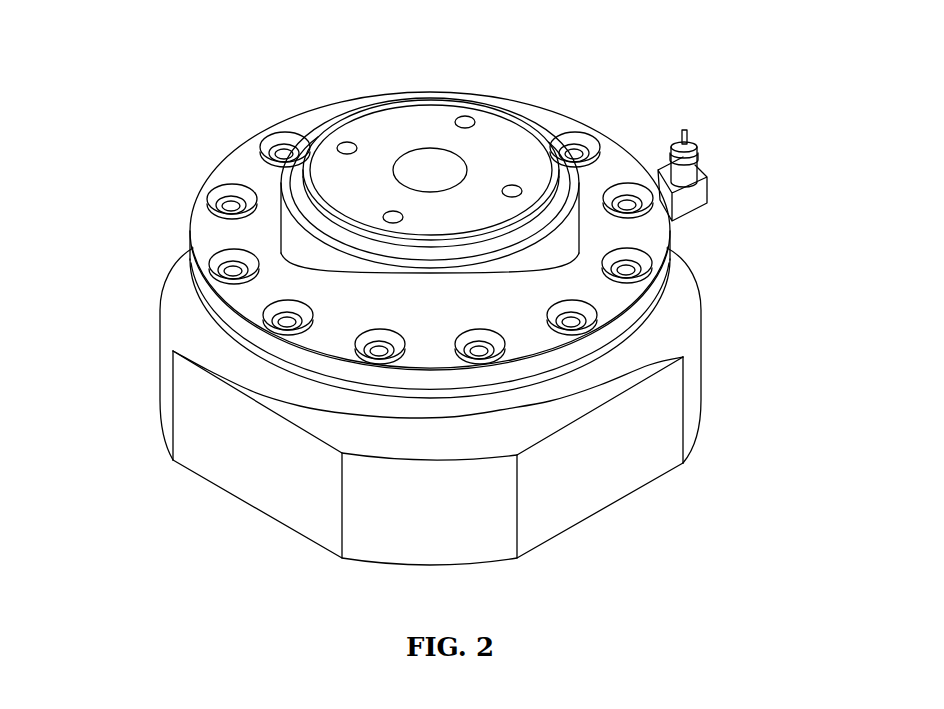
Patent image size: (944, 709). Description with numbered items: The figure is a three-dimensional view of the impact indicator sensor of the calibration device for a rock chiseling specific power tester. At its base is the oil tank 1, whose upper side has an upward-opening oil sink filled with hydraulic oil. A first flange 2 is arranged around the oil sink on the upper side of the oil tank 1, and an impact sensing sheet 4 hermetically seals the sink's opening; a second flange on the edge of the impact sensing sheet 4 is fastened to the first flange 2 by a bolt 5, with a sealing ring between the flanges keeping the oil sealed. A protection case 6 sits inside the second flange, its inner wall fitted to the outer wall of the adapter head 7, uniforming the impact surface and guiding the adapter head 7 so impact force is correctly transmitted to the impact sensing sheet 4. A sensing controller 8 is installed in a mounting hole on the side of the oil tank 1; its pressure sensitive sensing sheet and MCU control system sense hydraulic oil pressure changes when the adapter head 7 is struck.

The oil tank 1 is at (203, 435).
The first flange 2 is at (227, 350).
The impact sensing sheet 4 is at (237, 230).
The bolt 5 is at (215, 207).
The protection case 6 is at (282, 197).
The adapter head 7 is at (370, 155).
The sensing controller 8 is at (705, 176).